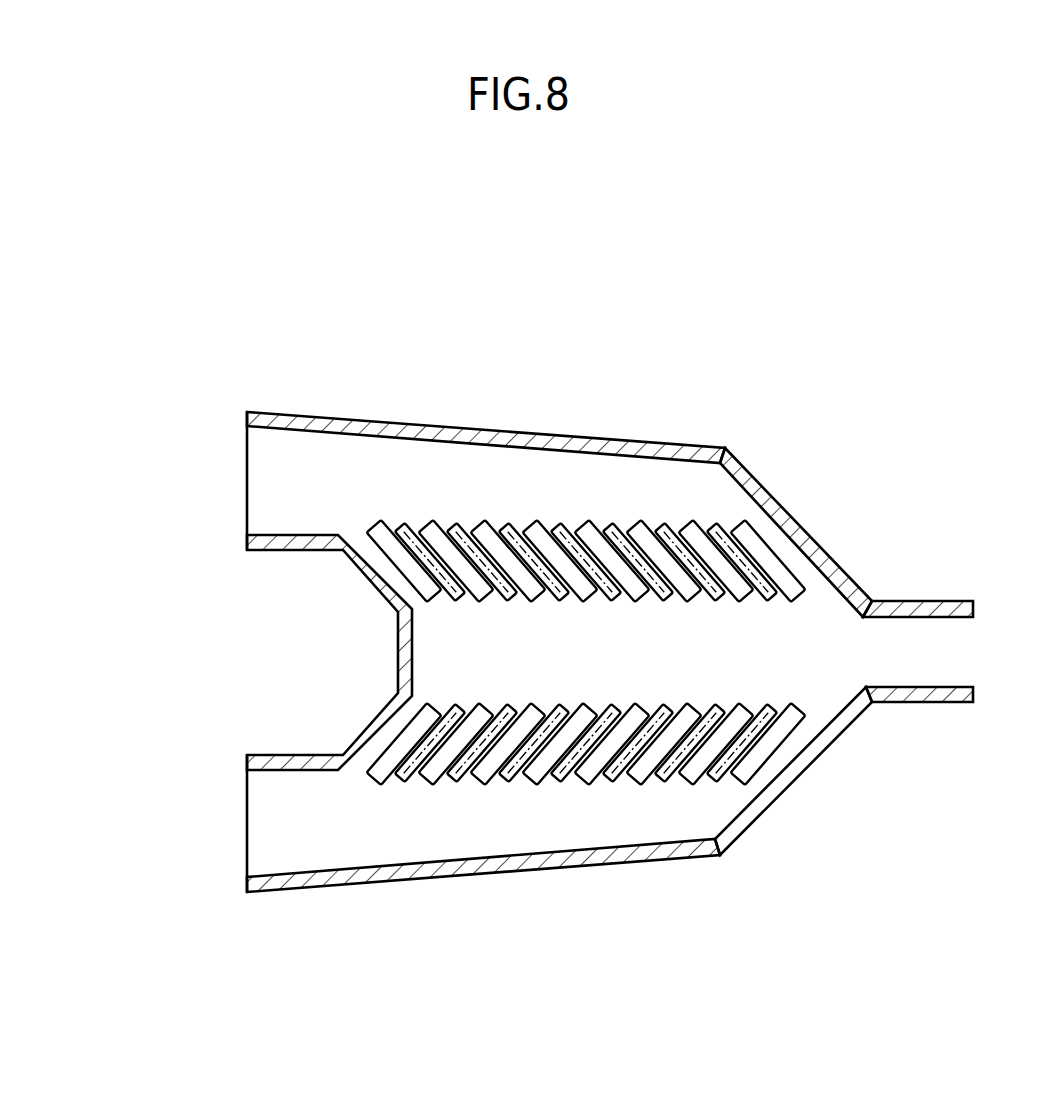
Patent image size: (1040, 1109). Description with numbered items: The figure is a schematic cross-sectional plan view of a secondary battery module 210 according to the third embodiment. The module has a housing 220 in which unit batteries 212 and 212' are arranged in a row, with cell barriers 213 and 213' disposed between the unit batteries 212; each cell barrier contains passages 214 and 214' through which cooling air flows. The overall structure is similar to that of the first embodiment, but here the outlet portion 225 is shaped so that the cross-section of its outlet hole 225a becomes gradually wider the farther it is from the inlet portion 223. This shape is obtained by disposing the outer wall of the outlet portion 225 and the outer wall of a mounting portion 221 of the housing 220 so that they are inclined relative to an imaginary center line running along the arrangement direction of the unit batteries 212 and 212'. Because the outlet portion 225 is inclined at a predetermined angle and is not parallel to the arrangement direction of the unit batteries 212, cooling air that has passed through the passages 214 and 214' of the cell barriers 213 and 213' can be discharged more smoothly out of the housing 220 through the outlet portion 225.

The secondary battery module 210 is at (675, 286).
The unit battery 212 is at (658, 486).
The cell barrier 213 is at (690, 468).
The passage 214 is at (695, 488).
The unit battery 212' is at (719, 803).
The cell barrier 213' is at (649, 824).
The passage 214' is at (683, 823).
The housing 220 is at (852, 648).
The mounting portion 221 is at (375, 707).
The inlet portion 223 is at (930, 705).
The outlet portion 225 is at (325, 417).
The outlet hole 225a is at (247, 489).